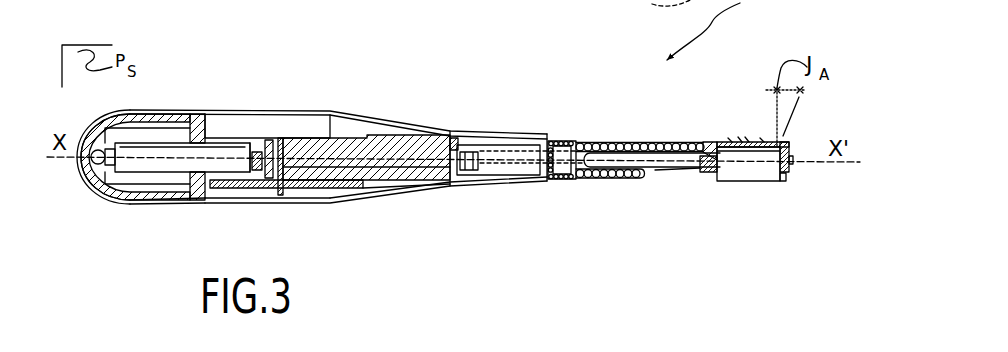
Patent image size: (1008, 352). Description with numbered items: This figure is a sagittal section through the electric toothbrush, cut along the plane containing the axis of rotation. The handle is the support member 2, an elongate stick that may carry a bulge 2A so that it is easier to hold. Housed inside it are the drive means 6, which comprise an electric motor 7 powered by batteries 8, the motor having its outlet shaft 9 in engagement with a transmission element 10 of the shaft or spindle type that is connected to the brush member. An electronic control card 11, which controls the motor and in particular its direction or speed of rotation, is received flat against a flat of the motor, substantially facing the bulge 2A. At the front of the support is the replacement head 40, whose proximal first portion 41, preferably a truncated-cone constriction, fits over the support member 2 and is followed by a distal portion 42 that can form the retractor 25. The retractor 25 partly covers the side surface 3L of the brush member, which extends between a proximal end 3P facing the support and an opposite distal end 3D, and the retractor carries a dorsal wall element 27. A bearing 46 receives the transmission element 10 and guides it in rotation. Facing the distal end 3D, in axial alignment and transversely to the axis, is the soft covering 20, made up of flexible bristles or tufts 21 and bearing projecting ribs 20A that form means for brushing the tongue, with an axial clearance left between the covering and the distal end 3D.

The support member 2 is at (363, 112).
The bulge 2A is at (307, 203).
The drive means 6 is at (457, 147).
The electric motor 7 is at (397, 181).
The batteries 8 is at (167, 170).
The outlet shaft 9 is at (480, 170).
The transmission element 10 is at (665, 175).
The electronic control card 11 is at (282, 194).
The soft covering 20 is at (792, 163).
The projecting ribs 20A is at (748, 140).
The tufts of flexible bristles or spikes 21 is at (792, 152).
The retractor 25 is at (730, 134).
The dorsal wall element 27 is at (763, 140).
The distal end 3D is at (788, 176).
The side surface 3L is at (755, 183).
The proximal end 3P is at (713, 175).
The replacement head 40 is at (606, 143).
The proximal first portion 41 is at (580, 185).
The distal portion 42 is at (703, 143).
The bearing 46 is at (700, 178).